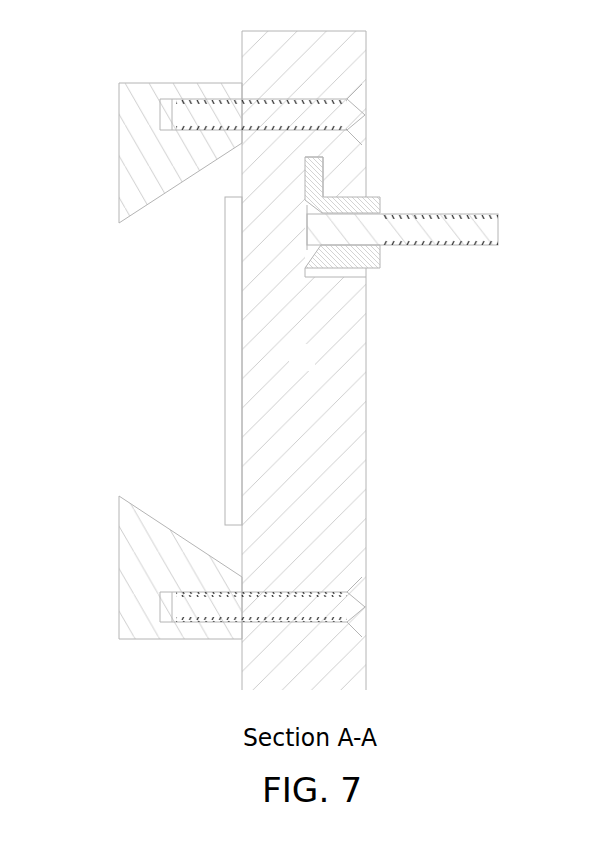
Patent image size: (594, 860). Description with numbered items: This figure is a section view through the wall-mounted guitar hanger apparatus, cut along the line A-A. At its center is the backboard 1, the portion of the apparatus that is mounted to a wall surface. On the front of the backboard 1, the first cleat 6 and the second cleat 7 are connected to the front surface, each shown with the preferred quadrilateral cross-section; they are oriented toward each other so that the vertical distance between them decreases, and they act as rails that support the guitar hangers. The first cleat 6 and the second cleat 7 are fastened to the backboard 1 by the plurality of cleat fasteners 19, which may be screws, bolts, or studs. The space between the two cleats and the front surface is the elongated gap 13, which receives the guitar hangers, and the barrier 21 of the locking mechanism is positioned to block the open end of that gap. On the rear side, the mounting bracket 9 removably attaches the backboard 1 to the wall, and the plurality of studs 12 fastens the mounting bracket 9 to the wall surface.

The backboard 1 is at (312, 368).
The first cleat 6 is at (155, 168).
The second cleat 7 is at (155, 573).
The mounting bracket 9 is at (377, 266).
The plurality of studs 12 is at (498, 229).
The elongated gap 13 is at (108, 355).
The plurality of cleat fasteners 19 is at (360, 117).
The barrier 21 is at (225, 363).